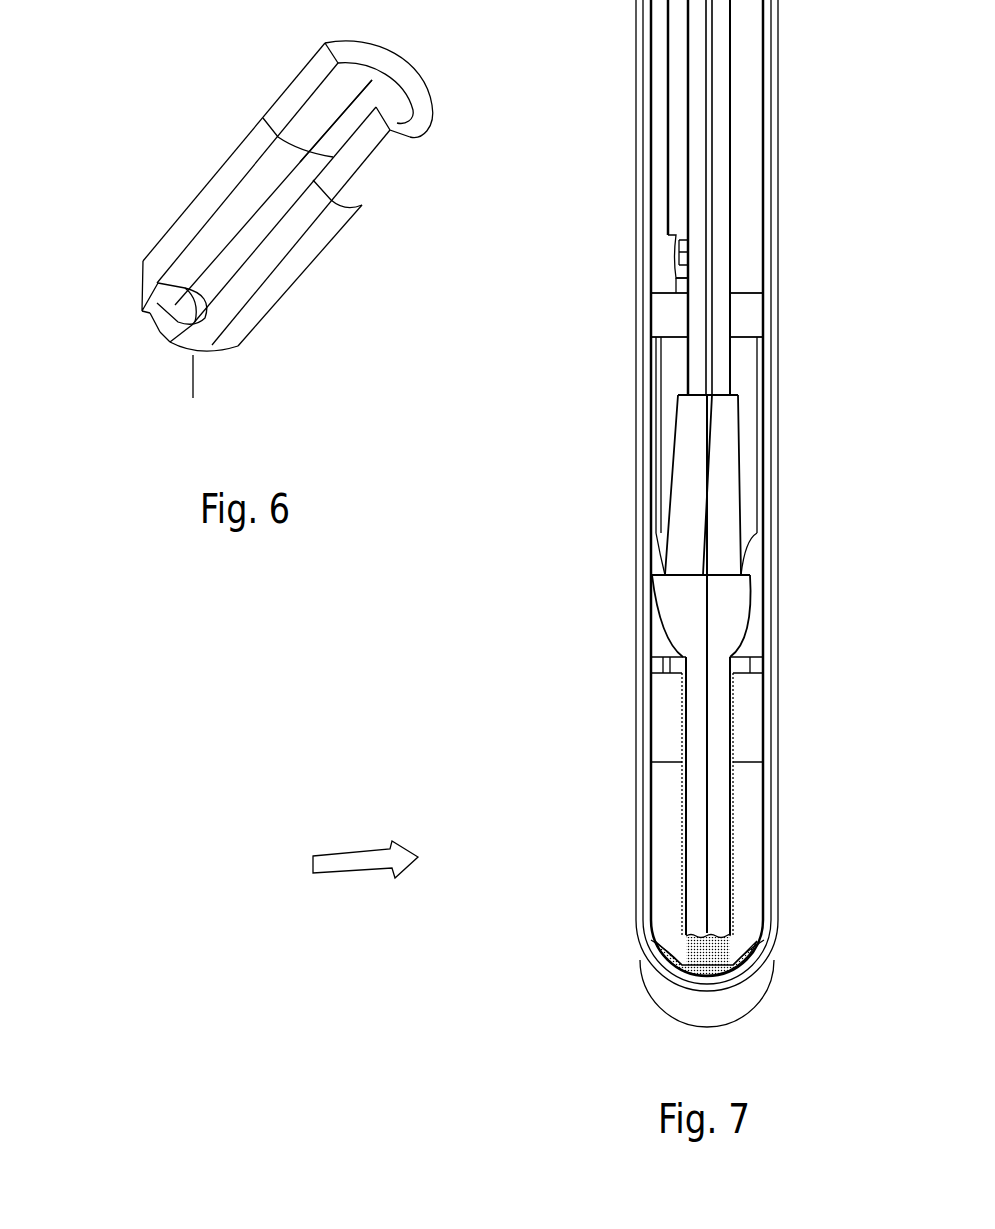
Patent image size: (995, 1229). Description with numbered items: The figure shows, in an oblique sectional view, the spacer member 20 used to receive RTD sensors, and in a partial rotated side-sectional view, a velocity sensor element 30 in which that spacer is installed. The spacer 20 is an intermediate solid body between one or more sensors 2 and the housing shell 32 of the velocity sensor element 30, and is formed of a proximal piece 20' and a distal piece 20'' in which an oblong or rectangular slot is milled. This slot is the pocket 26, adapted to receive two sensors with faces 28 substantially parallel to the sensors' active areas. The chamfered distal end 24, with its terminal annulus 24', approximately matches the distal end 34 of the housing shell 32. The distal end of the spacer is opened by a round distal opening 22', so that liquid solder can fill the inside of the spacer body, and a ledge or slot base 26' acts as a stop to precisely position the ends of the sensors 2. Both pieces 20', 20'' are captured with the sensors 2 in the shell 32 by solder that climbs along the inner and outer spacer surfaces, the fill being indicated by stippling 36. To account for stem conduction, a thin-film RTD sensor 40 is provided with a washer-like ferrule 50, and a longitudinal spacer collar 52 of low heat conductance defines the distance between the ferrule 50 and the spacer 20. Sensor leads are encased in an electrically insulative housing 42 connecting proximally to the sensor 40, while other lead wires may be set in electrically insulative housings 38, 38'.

In FIG. 7, the sensor 2 is at (662, 656).
In FIG. 6, the spacer member 20 is at (189, 177).
In FIG. 7, the spacer member 20 is at (789, 796).
In FIG. 6, the proximal piece 20' is at (295, 194).
In FIG. 7, the proximal piece 20' is at (751, 819).
In FIG. 6, the distal piece 20'' is at (280, 234).
In FIG. 7, the distal piece 20'' is at (794, 819).
In FIG. 6, the distal opening 22' is at (104, 373).
In FIG. 6, the chamfered distal end 24 is at (160, 363).
In FIG. 6, the terminal annulus 24' is at (93, 336).
In FIG. 6, the pocket 26 is at (402, 136).
In FIG. 6, the slot base 26' is at (137, 401).
In FIG. 6, the faces 28 is at (370, 0).
In FIG. 7, the faces 28 is at (682, 827).
In FIG. 7, the velocity sensor element 30 is at (523, 707).
In FIG. 7, the housing shell 32 is at (646, 777).
In FIG. 7, the distal end of housing shell 34 is at (735, 980).
In FIG. 7, the stippling 36 is at (688, 984).
In FIG. 7, the electrically insulative housing 38 is at (746, 637).
In FIG. 7, the electrically insulative housing 38' is at (785, 197).
In FIG. 7, the thin-film RTD sensor 40 is at (661, 262).
In FIG. 7, the electrically insulative housing 42 is at (682, 177).
In FIG. 7, the ferrule 50 is at (663, 313).
In FIG. 7, the longitudinal spacer collar 52 is at (663, 416).